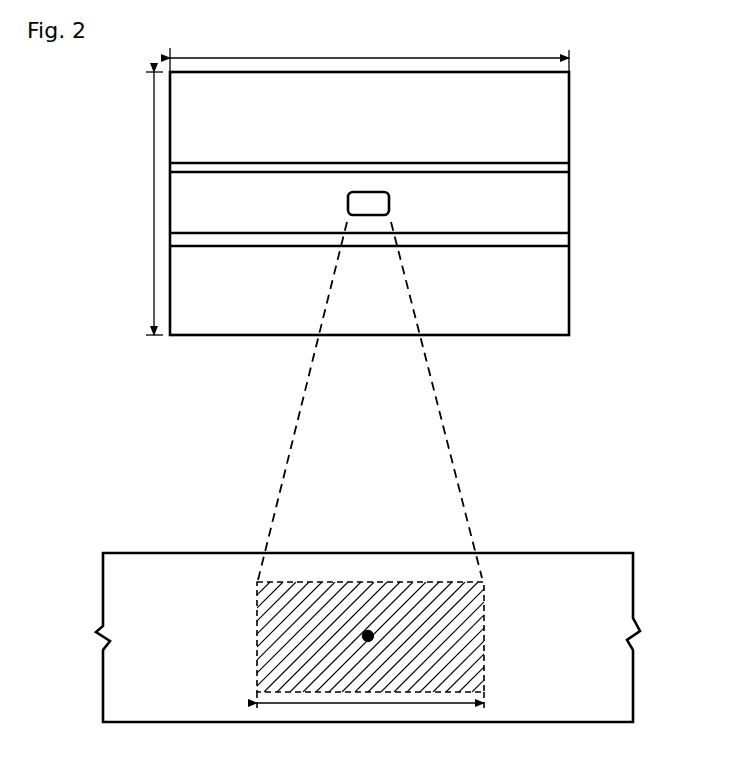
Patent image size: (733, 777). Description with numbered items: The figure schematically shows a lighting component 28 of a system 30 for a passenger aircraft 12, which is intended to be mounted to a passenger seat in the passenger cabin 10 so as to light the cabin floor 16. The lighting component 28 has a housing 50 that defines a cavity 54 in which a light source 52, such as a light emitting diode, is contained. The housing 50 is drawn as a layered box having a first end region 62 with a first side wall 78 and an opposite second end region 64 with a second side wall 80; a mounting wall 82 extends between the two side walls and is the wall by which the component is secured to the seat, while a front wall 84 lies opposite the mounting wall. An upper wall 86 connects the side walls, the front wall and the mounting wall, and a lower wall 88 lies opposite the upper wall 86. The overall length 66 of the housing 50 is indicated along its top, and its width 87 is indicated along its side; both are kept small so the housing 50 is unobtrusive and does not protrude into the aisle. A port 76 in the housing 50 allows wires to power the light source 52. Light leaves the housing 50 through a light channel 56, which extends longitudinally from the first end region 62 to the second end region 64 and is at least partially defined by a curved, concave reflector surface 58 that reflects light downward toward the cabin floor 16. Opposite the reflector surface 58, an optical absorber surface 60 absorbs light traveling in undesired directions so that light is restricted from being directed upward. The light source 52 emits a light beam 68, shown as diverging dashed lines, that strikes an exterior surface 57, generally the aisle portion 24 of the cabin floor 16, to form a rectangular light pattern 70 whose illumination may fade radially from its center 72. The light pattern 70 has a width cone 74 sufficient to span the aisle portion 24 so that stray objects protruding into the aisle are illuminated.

The passenger cabin 10 is at (585, 500).
The passenger aircraft 12 is at (633, 467).
The cabin floor 16 is at (581, 615).
The aisle portion 24 is at (369, 167).
The lighting component 28 is at (108, 191).
The system 30 is at (645, 73).
The housing 50 is at (571, 116).
The light source 52 is at (391, 203).
The cavity 54 is at (232, 100).
The light channel 56 is at (188, 206).
The exterior surface 57 is at (590, 553).
The reflector surface 58 is at (571, 240).
The optical absorber surface 60 is at (571, 168).
The first end region 62 is at (127, 203).
The second end region 64 is at (582, 209).
The length of housing 66 is at (414, 58).
The light beam 68 is at (455, 462).
The light pattern 70 is at (272, 640).
The center of light pattern 72 is at (368, 630).
The width cone 74 is at (355, 705).
The port 76 is at (196, 124).
The first side wall 78 is at (169, 297).
The second side wall 80 is at (571, 291).
The mounting wall 82 is at (538, 96).
The front wall 84 is at (264, 92).
The upper wall 86 is at (340, 72).
The width of housing 87 is at (154, 197).
The lower wall 88 is at (520, 328).